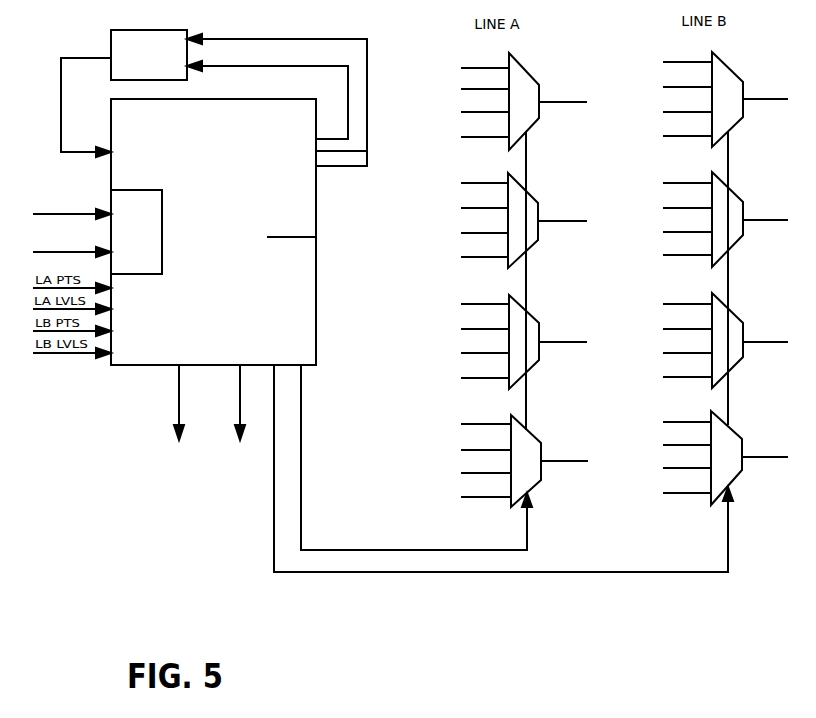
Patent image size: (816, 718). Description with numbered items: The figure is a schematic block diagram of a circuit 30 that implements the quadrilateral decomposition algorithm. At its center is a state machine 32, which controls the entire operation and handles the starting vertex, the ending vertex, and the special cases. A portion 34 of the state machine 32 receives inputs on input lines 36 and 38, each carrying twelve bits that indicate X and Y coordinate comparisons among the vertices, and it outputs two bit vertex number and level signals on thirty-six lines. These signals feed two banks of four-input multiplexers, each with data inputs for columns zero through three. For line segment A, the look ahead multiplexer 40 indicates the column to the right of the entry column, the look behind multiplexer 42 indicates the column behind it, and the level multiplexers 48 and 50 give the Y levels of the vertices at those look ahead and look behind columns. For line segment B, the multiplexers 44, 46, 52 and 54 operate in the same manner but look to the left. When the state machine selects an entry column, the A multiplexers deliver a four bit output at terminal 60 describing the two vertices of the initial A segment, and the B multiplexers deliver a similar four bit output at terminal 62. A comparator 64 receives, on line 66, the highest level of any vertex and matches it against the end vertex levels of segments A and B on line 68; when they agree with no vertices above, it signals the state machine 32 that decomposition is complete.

The circuit 30 is at (380, 314).
The state machine 32 is at (316, 237).
The portion of the state machine 34 is at (136, 232).
The input line 36 is at (78, 212).
The input line 38 is at (78, 251).
The look ahead multiplexer 40 is at (528, 118).
The look behind multiplexer 42 is at (522, 235).
The look ahead multiplexer 44 is at (729, 113).
The look behind multiplexer 46 is at (728, 237).
The look ahead level multiplexer 48 is at (530, 362).
The look behind level multiplexer 50 is at (522, 477).
The look ahead level multiplexer 52 is at (737, 359).
The look behind level multiplexer 54 is at (735, 472).
The terminal 60 is at (180, 408).
The terminal 62 is at (241, 408).
The comparator 64 is at (124, 93).
The line 66 is at (348, 87).
The line 68 is at (367, 112).